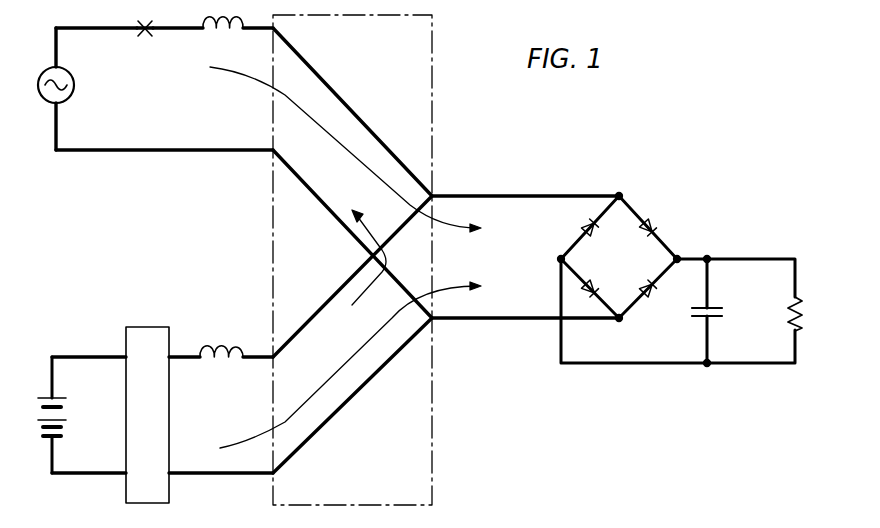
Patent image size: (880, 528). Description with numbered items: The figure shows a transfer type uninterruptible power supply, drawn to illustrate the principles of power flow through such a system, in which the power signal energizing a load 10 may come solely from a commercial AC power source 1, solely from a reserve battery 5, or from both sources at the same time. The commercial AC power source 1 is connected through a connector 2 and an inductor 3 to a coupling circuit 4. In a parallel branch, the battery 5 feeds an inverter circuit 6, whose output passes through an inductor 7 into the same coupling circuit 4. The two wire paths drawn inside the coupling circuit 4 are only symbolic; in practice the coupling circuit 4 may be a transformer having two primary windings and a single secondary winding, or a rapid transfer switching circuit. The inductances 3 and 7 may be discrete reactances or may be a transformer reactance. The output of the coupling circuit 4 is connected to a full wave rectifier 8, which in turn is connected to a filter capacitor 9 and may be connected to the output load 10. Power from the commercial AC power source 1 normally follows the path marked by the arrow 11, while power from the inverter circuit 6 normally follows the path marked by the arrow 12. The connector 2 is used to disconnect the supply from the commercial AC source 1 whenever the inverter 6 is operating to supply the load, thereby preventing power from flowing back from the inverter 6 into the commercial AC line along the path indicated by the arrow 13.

The commercial AC power source 1 is at (76, 82).
The connector 2 is at (145, 21).
The inductor 3 is at (223, 14).
The coupling circuit 4 is at (434, 47).
The battery 5 is at (60, 415).
The inverter circuit 6 is at (145, 327).
The inductor 7 is at (221, 341).
The full wave rectifier 8 is at (619, 257).
The filter capacitor 9 is at (714, 311).
The load 10 is at (808, 314).
The arrow 11 is at (346, 147).
The arrow 12 is at (339, 373).
The arrow 13 is at (385, 258).